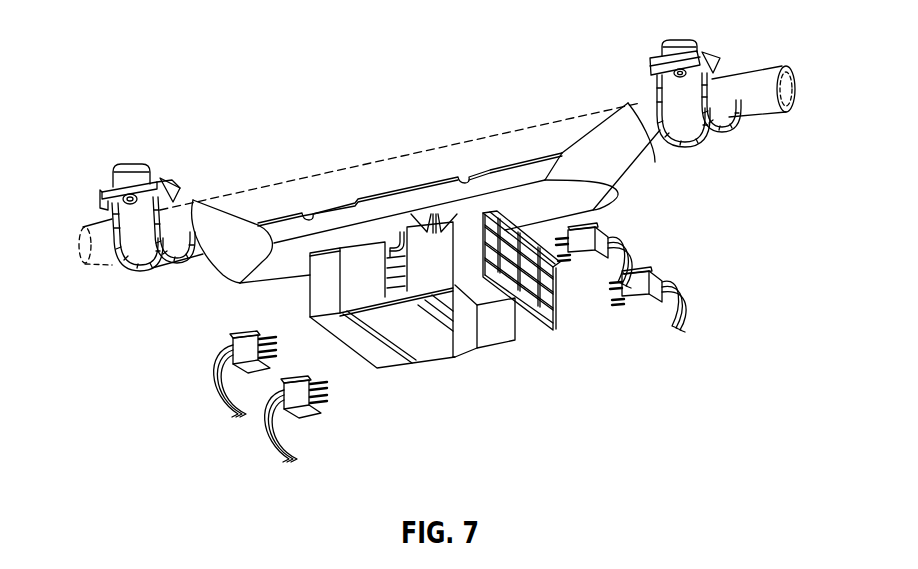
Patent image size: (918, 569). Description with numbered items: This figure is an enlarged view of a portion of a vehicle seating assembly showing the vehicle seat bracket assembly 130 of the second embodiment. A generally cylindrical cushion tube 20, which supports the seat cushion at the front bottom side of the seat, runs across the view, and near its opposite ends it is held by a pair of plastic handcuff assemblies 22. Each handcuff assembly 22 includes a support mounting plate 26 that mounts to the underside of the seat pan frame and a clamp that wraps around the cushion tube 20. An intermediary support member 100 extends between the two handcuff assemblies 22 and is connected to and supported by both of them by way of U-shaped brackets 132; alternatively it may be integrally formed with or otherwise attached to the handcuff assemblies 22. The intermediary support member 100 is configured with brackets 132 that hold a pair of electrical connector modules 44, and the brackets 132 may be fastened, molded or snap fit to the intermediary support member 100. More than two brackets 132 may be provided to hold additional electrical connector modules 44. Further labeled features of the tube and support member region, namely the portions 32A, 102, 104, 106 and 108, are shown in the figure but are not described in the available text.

The cushion tube 20 is at (520, 128).
The handcuff assembly 22 is at (169, 221).
The support mounting plate 26 is at (684, 0).
The tube section 32A is at (138, 237).
The electrical connector module 44 is at (380, 360).
The intermediary support member 100 is at (268, 277).
The clamp base 102 is at (187, 243).
The collar end portion 104 is at (657, 133).
The bracket 106 is at (380, 212).
The terminal 108 is at (423, 223).
The vehicle seat bracket assembly 130 is at (590, 333).
The bracket 132 is at (390, 233).